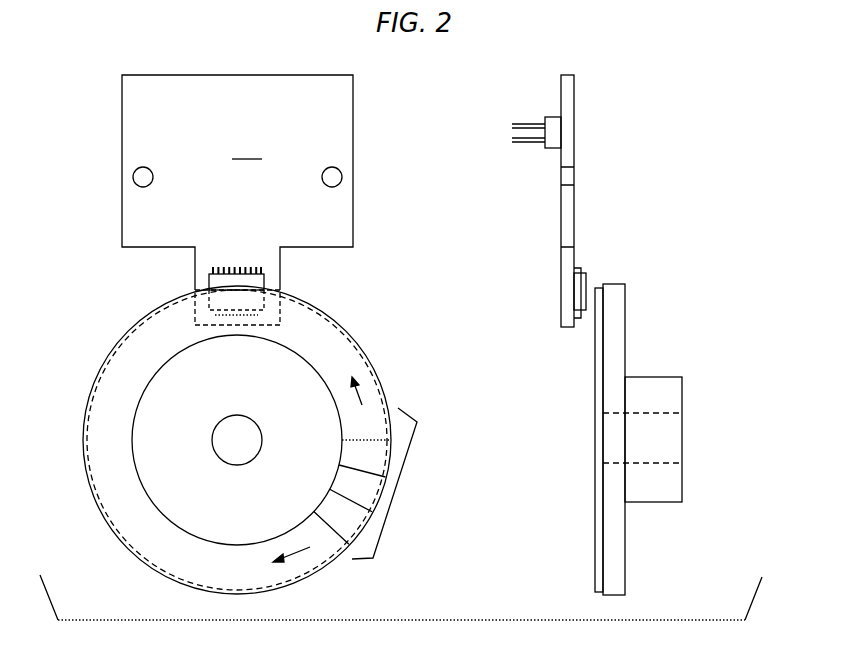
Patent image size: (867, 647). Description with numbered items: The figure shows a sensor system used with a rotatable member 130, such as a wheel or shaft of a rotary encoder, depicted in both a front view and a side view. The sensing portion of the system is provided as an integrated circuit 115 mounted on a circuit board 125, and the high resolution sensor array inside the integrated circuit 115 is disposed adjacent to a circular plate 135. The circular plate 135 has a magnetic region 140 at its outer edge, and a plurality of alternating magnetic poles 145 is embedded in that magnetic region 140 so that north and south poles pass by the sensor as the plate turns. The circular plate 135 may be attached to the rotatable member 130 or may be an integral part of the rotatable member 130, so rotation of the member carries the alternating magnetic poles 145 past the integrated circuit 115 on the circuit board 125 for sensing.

The circuit board 125 is at (575, 105).
The integrated circuit 115 is at (210, 276).
The rotatable member 130 is at (262, 440).
The magnetic region 140 is at (140, 523).
The alternating magnetic poles 145 is at (393, 493).
The circular plate 135 is at (625, 577).